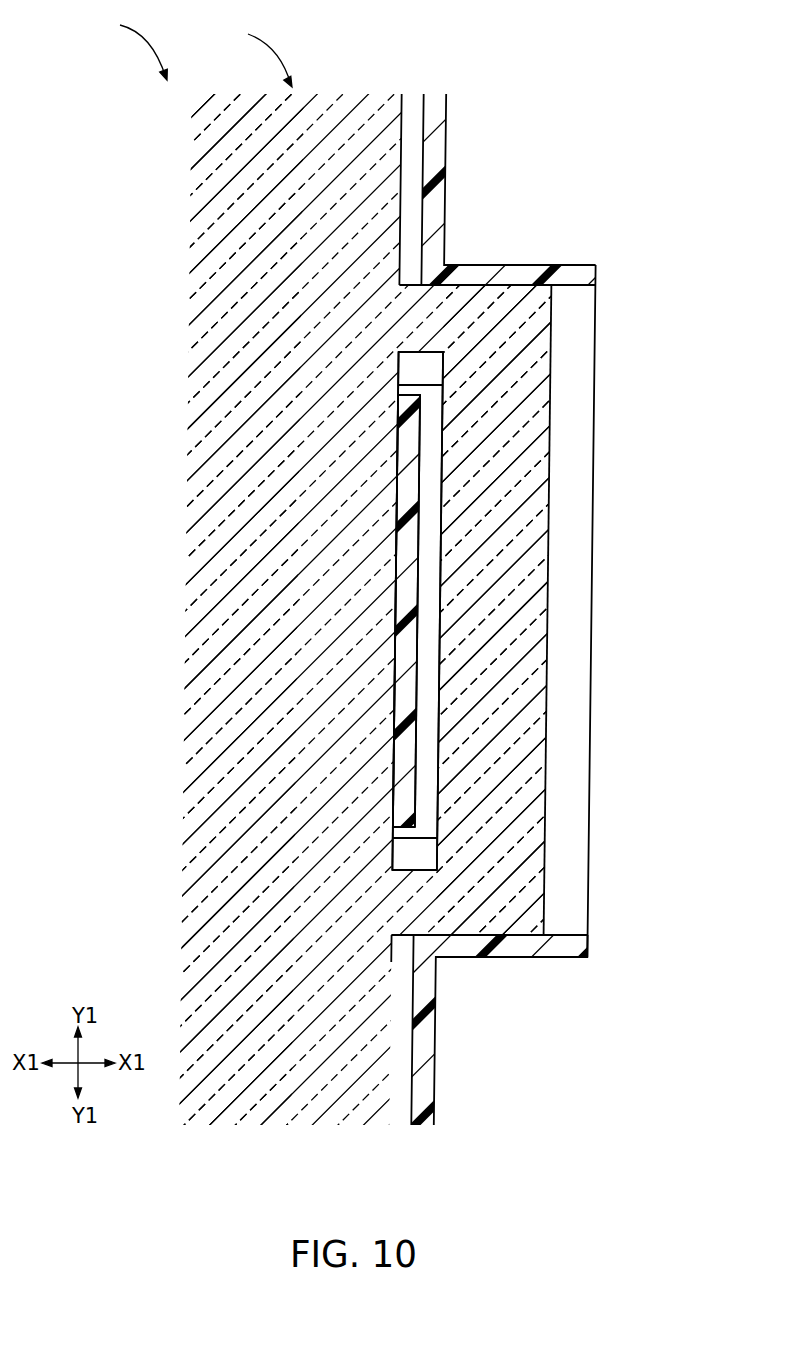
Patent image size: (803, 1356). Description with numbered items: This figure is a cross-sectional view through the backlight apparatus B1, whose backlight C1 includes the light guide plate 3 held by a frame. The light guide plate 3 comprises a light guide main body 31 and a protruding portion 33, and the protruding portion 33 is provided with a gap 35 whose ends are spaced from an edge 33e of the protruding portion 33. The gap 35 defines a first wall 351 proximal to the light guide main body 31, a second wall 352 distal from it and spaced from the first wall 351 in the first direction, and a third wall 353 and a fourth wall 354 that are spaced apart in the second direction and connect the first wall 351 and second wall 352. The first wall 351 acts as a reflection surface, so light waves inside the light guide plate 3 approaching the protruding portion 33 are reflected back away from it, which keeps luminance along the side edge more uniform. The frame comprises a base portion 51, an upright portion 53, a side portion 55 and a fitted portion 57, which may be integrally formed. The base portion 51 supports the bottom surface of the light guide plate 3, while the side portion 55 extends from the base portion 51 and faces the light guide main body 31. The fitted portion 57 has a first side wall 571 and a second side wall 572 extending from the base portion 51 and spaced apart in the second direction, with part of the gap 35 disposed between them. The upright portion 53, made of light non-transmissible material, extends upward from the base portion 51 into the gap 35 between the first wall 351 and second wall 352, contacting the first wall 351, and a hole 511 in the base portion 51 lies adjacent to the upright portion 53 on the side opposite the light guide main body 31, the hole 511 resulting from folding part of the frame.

The light guide plate 3 is at (319, 1053).
The light guide main body 31 is at (253, 1053).
The protruding portion 33 is at (522, 762).
The edge of the protruding portion 33e is at (400, 937).
The gap 35 is at (430, 703).
The first wall 351 is at (420, 420).
The second wall 352 is at (438, 455).
The third wall 353 is at (408, 868).
The fourth wall 354 is at (422, 353).
The base portion 51 is at (407, 180).
The hole 511 is at (430, 532).
The upright portion 53 is at (407, 572).
The side portion 55 is at (433, 241).
The fitted portion 57 is at (560, 945).
The first side wall 571 is at (430, 933).
The second side wall 572 is at (437, 290).
The backlight apparatus B1 is at (127, 46).
The backlight C1 is at (252, 54).